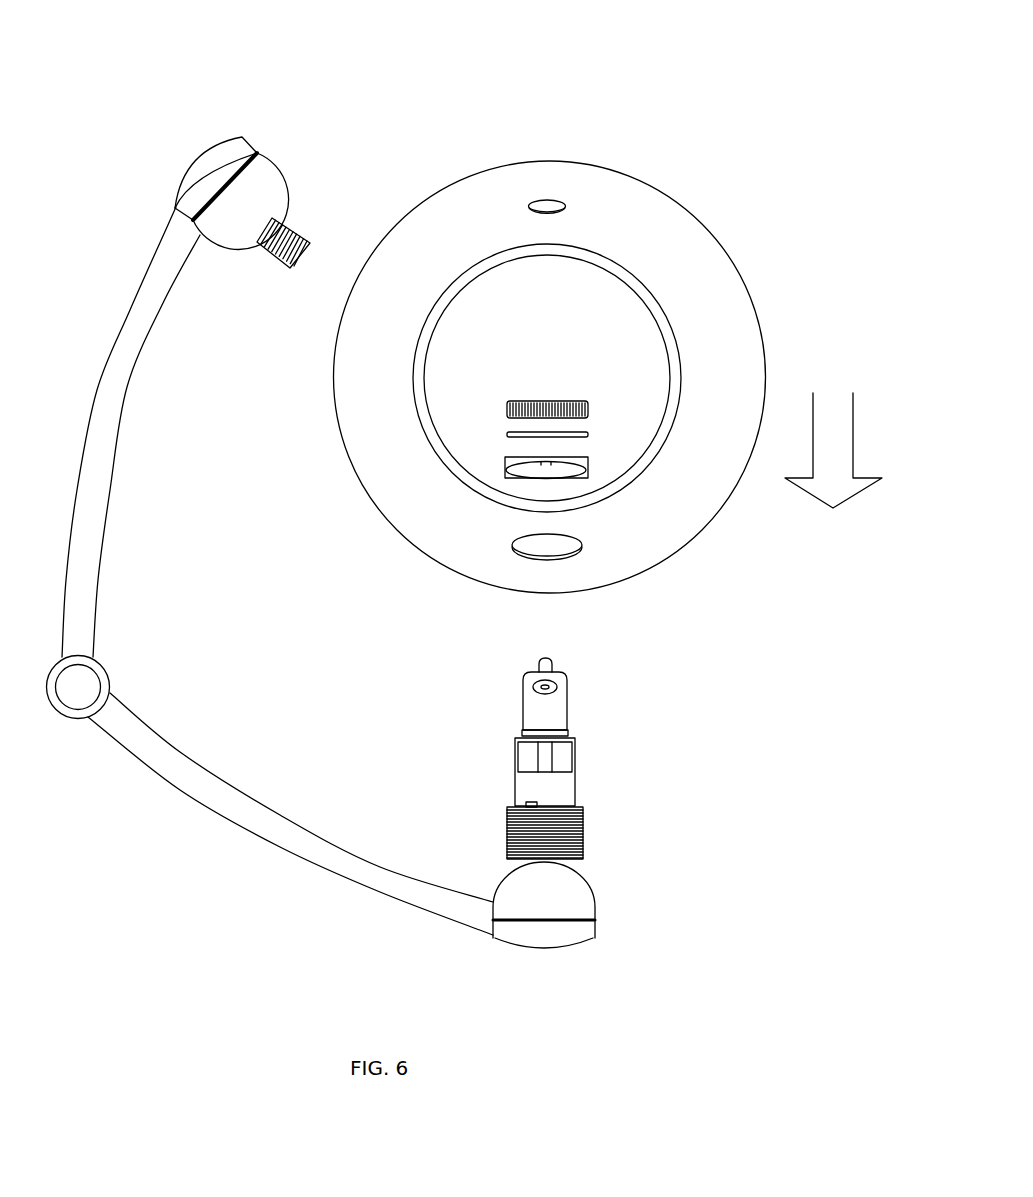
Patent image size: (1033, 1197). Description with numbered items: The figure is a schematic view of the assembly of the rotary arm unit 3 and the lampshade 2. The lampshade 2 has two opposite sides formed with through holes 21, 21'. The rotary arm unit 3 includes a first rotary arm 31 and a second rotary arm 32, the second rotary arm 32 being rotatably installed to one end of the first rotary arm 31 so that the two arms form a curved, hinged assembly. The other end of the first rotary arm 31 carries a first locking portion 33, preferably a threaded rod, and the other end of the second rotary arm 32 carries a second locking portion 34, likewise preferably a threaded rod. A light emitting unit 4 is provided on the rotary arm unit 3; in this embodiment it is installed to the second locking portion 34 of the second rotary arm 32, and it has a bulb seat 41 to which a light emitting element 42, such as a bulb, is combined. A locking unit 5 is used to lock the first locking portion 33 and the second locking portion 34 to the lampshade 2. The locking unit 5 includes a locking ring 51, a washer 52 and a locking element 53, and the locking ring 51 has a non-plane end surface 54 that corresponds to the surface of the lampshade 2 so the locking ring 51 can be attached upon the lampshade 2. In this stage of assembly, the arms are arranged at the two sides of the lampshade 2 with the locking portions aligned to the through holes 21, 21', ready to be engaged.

The lampshade 2 is at (370, 390).
The through hole 21 is at (565, 132).
The through hole 21' is at (478, 579).
The rotary arm unit 3 is at (399, 514).
The first rotary arm 31 is at (147, 297).
The second rotary arm 32 is at (260, 822).
The first locking portion 33 is at (259, 180).
The second locking portion 34 is at (585, 897).
The light emitting unit 4 is at (555, 758).
The bulb seat 41 is at (562, 793).
The light emitting element 42 is at (558, 708).
The locking unit 5 is at (561, 395).
The locking ring 51 is at (584, 476).
The washer 52 is at (589, 434).
The locking element 53 is at (568, 400).
The non-plane end surface 54 is at (515, 469).